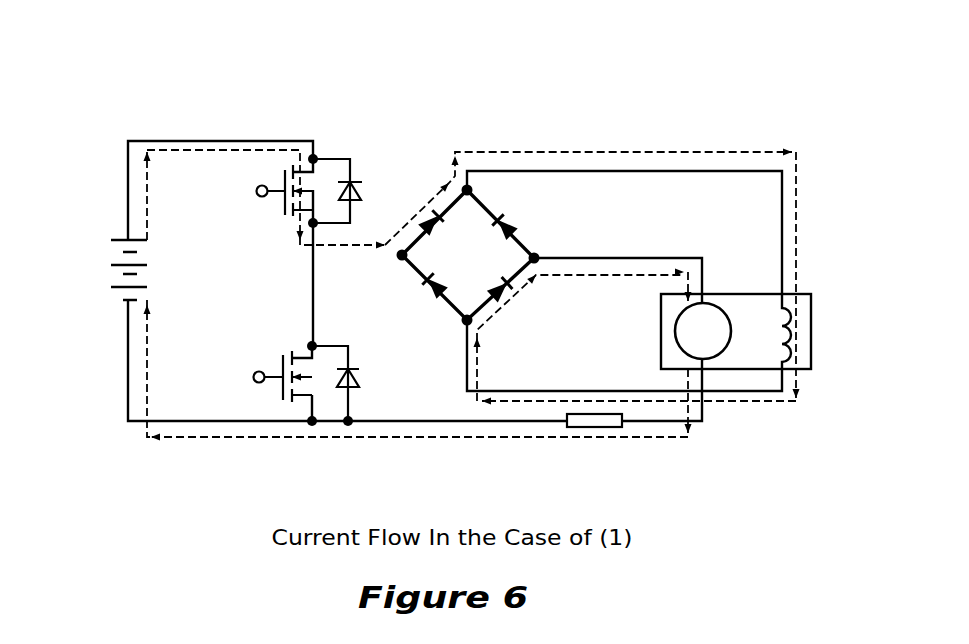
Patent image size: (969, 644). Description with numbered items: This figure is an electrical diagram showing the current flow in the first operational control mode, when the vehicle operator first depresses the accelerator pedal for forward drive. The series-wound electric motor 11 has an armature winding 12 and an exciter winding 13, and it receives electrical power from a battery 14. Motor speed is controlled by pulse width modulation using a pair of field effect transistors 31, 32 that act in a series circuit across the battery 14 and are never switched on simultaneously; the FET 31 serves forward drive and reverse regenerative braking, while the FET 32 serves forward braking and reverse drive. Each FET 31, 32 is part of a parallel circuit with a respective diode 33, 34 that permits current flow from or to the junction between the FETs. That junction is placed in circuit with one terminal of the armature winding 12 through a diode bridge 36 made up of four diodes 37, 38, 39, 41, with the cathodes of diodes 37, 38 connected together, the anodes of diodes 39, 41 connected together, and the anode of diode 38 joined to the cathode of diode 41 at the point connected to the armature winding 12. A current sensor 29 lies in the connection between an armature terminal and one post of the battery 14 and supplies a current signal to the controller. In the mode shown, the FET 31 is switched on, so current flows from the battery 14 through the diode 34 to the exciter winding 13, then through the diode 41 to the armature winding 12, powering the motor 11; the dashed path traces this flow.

The electric motor 11 is at (742, 294).
The armature winding 12 is at (683, 351).
The exciter winding 13 is at (793, 332).
The battery 14 is at (112, 272).
The current sensor 29 is at (612, 428).
The field effect transistor 31 is at (283, 205).
The field effect transistor 32 is at (283, 365).
The diode 33 is at (360, 190).
The diode 34 is at (360, 382).
The diode bridge 36 is at (440, 263).
The diode 37 is at (428, 212).
The diode 38 is at (517, 220).
The diode 39 is at (423, 283).
The diode 41 is at (505, 290).